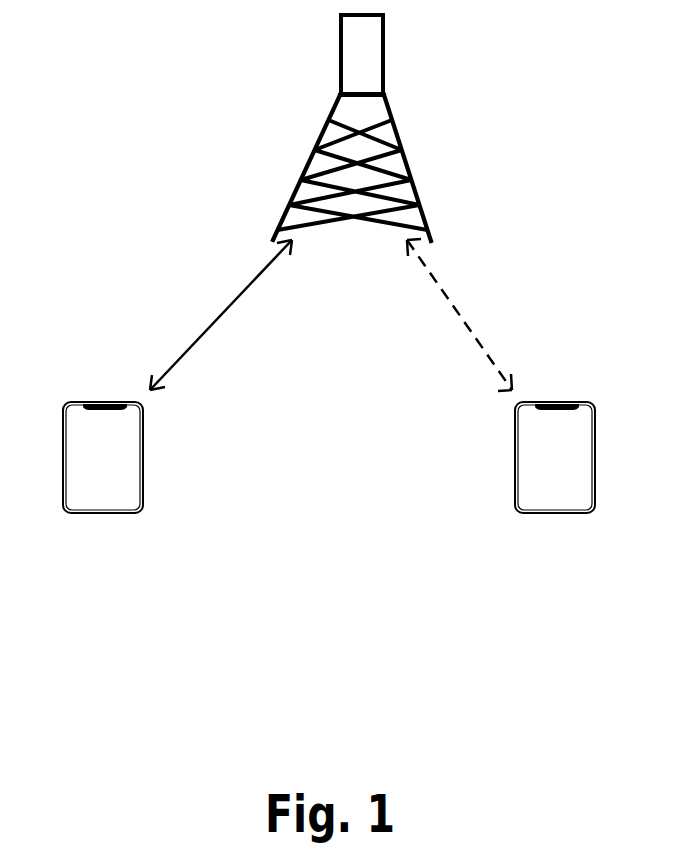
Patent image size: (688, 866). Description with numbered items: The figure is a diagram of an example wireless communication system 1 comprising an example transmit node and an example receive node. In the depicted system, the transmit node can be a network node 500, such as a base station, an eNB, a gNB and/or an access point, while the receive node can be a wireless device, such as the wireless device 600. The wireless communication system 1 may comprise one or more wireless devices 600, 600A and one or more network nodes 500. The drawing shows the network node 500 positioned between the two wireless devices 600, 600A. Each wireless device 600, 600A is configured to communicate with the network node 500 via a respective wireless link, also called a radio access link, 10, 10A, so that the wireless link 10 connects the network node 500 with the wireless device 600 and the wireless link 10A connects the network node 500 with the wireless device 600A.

The wireless communication system 1 is at (148, 78).
The network node 500 is at (413, 183).
The wireless link 10 is at (202, 330).
The wireless link 10A is at (465, 318).
The wireless device 600 is at (103, 457).
The wireless device 600A is at (555, 457).